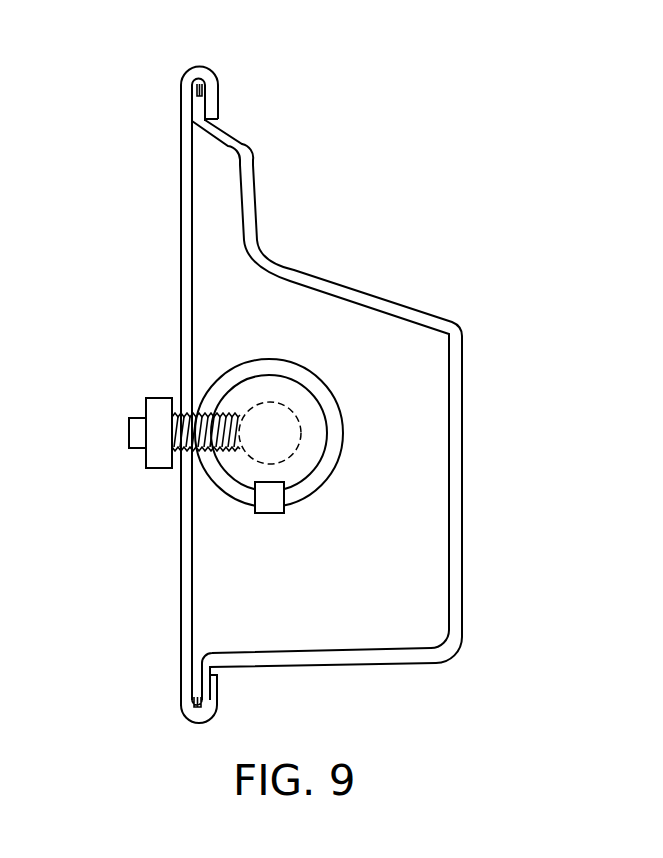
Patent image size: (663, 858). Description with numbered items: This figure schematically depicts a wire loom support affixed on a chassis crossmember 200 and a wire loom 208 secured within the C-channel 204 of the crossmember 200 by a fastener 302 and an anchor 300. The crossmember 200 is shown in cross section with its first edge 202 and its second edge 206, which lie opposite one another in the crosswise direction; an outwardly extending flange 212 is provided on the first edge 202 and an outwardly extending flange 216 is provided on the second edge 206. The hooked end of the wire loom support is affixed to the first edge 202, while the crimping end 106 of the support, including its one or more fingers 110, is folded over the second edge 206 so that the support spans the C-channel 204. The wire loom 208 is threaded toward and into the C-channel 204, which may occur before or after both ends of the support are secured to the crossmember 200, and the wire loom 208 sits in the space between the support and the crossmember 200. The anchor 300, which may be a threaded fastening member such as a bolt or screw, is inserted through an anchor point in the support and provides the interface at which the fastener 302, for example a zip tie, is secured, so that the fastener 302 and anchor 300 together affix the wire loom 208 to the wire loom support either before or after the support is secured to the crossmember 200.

The crimping end 106 is at (200, 65).
The second edge 206 is at (199, 80).
The fingers 110 is at (215, 110).
The outwardly extending flange 216 is at (196, 113).
The chassis crossmember 200 is at (463, 483).
The C-channel 204 is at (365, 595).
The first edge 202 is at (193, 717).
The outwardly extending flange 212 is at (193, 683).
The fastener 302 is at (266, 358).
The wire loom 208 is at (302, 428).
The anchor 300 is at (128, 433).